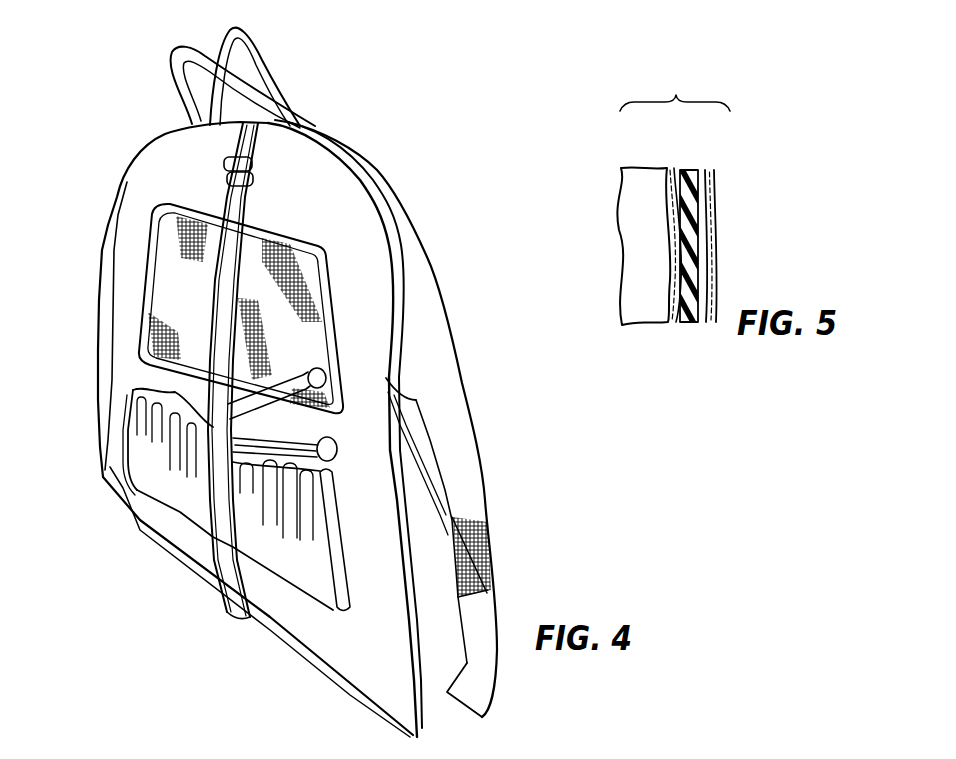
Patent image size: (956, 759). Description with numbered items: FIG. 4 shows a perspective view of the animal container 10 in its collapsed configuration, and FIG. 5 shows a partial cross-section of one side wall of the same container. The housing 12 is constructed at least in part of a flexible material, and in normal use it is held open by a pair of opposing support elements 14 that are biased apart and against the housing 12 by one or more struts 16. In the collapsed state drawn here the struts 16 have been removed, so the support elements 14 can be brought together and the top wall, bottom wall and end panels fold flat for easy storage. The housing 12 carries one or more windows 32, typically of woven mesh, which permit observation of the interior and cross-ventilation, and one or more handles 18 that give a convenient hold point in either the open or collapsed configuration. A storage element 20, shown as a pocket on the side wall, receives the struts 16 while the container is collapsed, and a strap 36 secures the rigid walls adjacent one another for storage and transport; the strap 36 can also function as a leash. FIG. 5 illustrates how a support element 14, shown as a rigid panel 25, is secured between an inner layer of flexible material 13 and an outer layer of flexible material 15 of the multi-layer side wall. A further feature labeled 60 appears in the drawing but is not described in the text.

In FIG. 4, the animal container 10 is at (263, 386).
In FIG. 4, the housing 12 is at (427, 327).
In FIG. 4, the struts 16 is at (325, 283).
In FIG. 4, the handles 18 is at (258, 46).
In FIG. 4, the storage element 20 is at (143, 447).
In FIG. 4, the windows 32 is at (163, 255).
In FIG. 4, the strap 36 is at (213, 582).
In FIG. 4, the bottom 60 is at (258, 613).
In FIG. 5, the inner layer of flexible material 13 is at (667, 266).
In FIG. 5, the support element 14 is at (669, 202).
In FIG. 5, the outer layer of flexible material 15 is at (713, 205).
In FIG. 5, the panel 25 is at (689, 171).